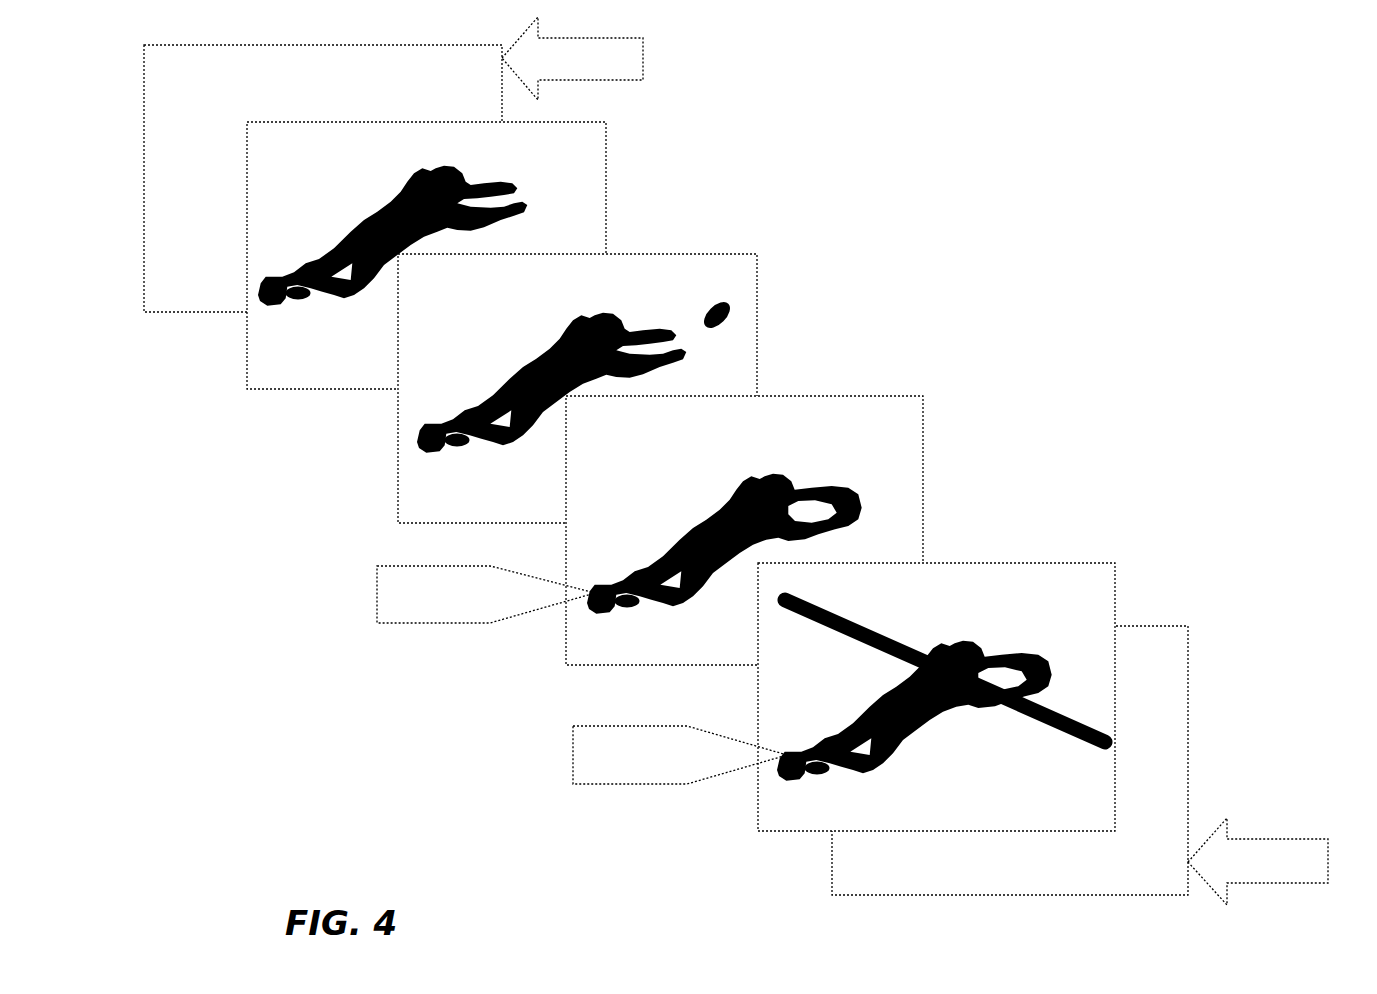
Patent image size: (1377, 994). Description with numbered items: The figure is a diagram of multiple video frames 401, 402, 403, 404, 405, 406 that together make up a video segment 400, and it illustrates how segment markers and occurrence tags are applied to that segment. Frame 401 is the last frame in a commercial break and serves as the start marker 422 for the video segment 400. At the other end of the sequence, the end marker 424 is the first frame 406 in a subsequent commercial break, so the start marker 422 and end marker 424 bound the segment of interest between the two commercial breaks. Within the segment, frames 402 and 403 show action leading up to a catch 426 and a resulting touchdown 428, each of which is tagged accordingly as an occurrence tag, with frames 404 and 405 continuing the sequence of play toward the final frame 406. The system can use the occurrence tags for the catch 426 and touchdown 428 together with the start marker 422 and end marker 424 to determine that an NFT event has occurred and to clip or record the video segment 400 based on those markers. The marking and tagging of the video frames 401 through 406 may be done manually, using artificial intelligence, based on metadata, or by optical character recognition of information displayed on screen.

The video segment 400 is at (1017, 283).
The frame 401 is at (198, 312).
The frame 402 is at (606, 207).
The frame 403 is at (757, 270).
The frame 404 is at (852, 395).
The frame 405 is at (1007, 563).
The frame 406 is at (1188, 697).
The start marker 422 is at (632, 82).
The end marker 424 is at (1260, 883).
The catch 426 is at (377, 612).
The touchdown 428 is at (572, 753).